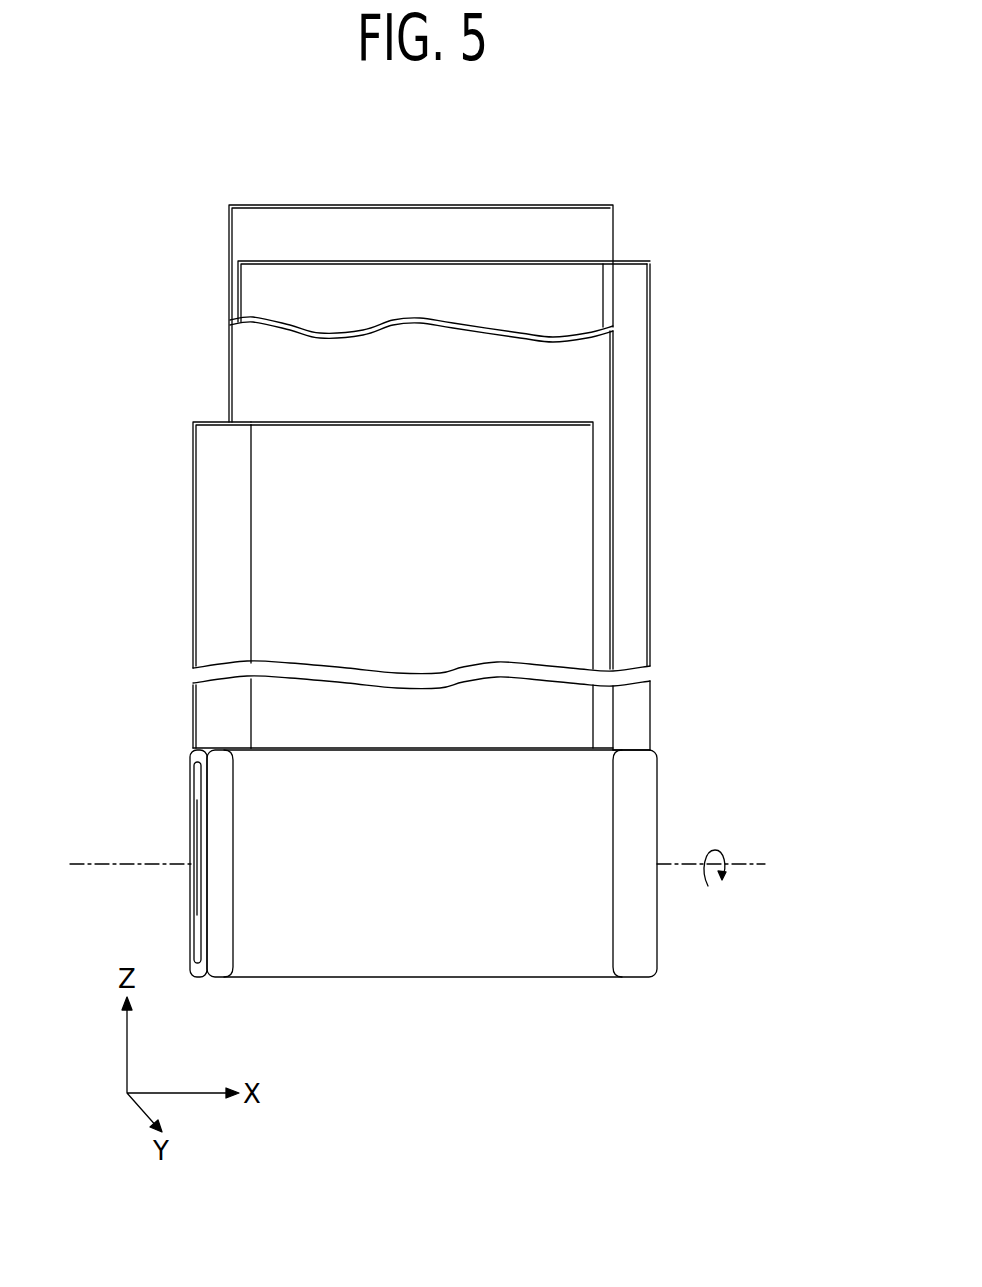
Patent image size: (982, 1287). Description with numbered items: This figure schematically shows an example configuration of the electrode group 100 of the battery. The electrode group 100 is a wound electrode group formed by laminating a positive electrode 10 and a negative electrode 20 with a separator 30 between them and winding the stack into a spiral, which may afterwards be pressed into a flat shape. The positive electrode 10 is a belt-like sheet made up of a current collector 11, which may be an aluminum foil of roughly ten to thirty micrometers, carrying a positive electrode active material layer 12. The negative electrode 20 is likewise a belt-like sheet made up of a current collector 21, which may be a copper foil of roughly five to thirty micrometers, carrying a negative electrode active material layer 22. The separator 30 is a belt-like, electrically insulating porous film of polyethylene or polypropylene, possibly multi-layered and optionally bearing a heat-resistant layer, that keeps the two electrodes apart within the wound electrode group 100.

The positive electrode 10 is at (353, 585).
The current collector 11 is at (236, 555).
The positive electrode active material layer 12 is at (288, 607).
The negative electrode 20 is at (525, 505).
The current collector 21 is at (633, 363).
The negative electrode active material layer 22 is at (578, 286).
The separator 30 is at (610, 217).
The electrode group 100 is at (452, 874).